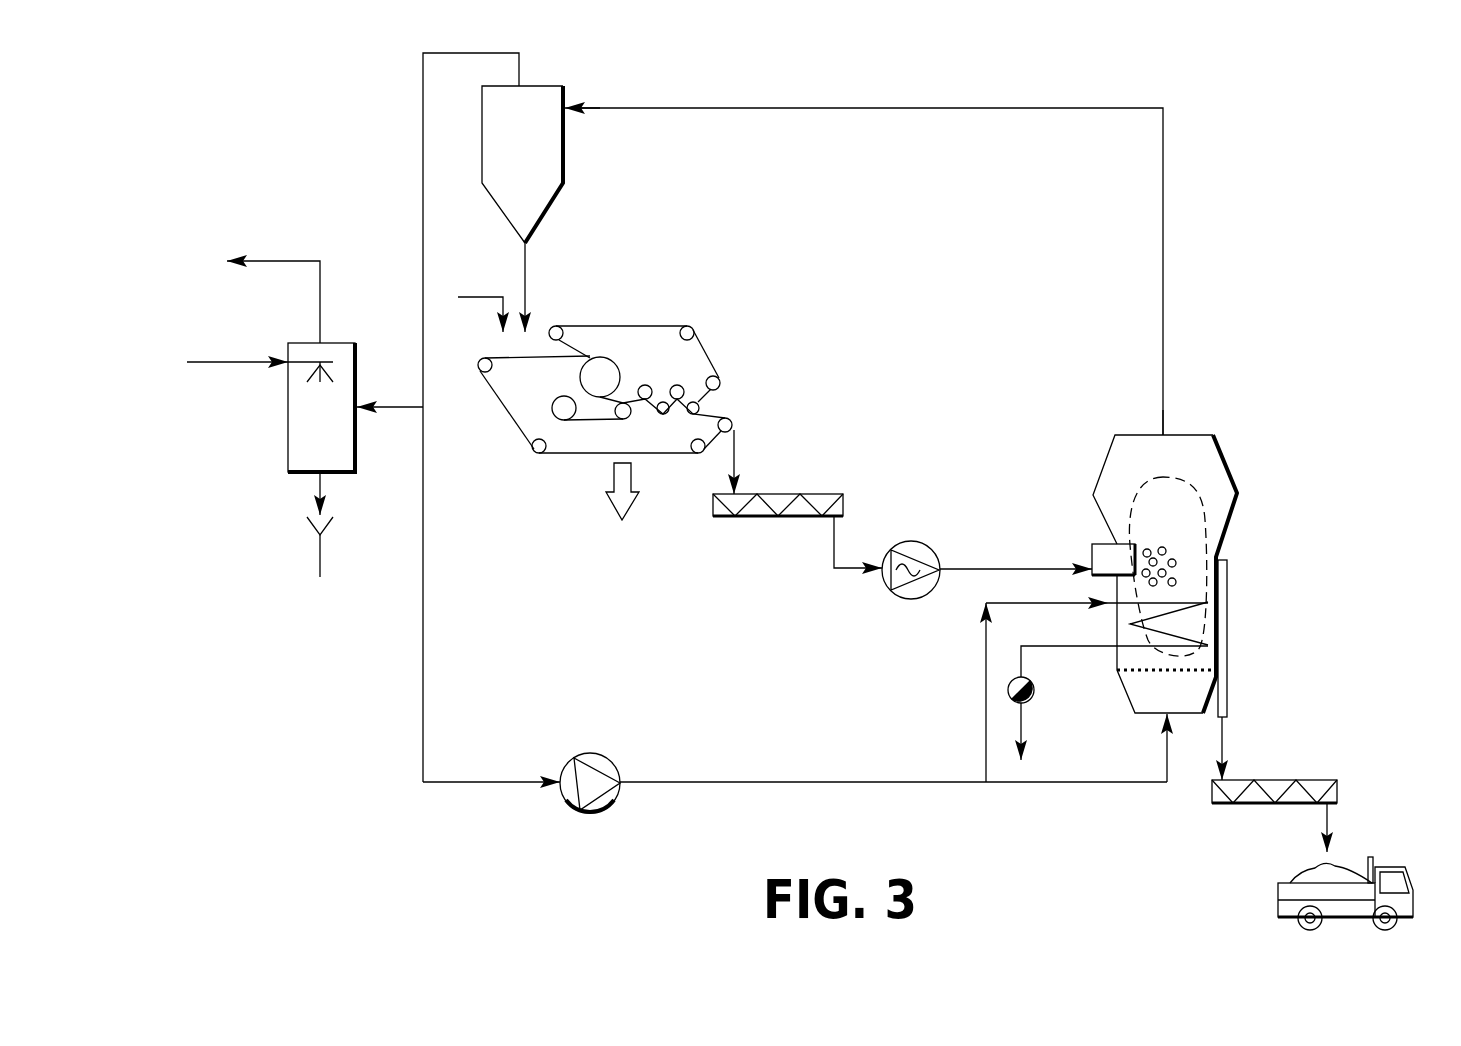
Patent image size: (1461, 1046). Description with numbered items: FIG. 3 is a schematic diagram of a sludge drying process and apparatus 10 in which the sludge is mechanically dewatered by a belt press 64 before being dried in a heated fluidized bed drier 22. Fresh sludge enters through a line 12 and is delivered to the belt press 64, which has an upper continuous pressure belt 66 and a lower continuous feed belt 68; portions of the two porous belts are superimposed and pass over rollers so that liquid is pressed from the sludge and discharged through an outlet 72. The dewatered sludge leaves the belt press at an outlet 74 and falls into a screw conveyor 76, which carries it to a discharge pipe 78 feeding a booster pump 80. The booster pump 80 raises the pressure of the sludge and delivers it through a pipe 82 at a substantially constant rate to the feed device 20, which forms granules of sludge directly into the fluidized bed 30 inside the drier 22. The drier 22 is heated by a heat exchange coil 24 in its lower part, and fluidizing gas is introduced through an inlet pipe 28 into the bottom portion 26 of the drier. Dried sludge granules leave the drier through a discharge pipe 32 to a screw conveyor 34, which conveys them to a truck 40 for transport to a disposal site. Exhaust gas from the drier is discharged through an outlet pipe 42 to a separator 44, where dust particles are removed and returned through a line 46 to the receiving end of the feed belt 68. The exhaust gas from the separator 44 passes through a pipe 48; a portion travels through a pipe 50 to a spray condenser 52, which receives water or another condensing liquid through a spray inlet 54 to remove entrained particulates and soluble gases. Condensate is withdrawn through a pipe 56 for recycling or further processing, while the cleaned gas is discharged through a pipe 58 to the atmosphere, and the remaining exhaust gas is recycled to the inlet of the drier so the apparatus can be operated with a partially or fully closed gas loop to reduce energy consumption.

The sludge processing system 10 is at (1270, 126).
The line 12 is at (483, 297).
The feed device 20 is at (1100, 558).
The fluidized bed drier 22 is at (1239, 519).
The heat exchange coil 24 is at (1175, 602).
The bottom portion 26 is at (1160, 708).
The inlet pipe 28 is at (1165, 745).
The fluidized bed 30 is at (1188, 482).
The discharge pipe 32 is at (1224, 742).
The screw conveyor 34 is at (1318, 788).
The truck 40 is at (1385, 866).
The outlet pipe 42 is at (1163, 297).
The separator 44 is at (545, 104).
The line 46 is at (527, 272).
The pipe 48 is at (423, 133).
The pipe 50 is at (399, 407).
The spray condenser 52 is at (298, 427).
The spray inlet 54 is at (232, 362).
The pipe 56 is at (320, 552).
The pipe 58 is at (290, 261).
The belt press 64 is at (610, 355).
The upper continuous pressure belt 66 is at (618, 325).
The lower continuous feed belt 68 is at (508, 424).
The outlet 72 is at (617, 512).
The outlet 74 is at (714, 412).
The screw conveyor 76 is at (745, 517).
The discharge pipe 78 is at (833, 547).
The booster pump 80 is at (912, 541).
The pipe 82 is at (963, 598).